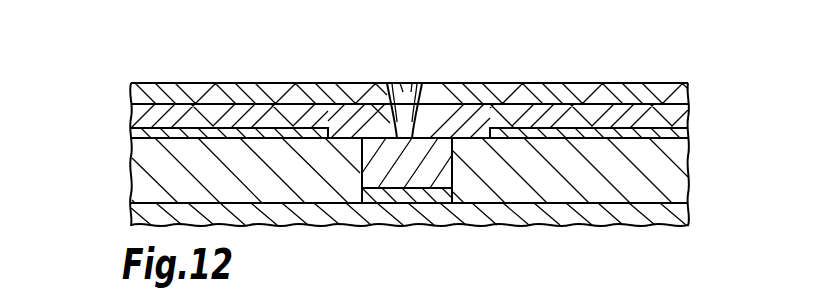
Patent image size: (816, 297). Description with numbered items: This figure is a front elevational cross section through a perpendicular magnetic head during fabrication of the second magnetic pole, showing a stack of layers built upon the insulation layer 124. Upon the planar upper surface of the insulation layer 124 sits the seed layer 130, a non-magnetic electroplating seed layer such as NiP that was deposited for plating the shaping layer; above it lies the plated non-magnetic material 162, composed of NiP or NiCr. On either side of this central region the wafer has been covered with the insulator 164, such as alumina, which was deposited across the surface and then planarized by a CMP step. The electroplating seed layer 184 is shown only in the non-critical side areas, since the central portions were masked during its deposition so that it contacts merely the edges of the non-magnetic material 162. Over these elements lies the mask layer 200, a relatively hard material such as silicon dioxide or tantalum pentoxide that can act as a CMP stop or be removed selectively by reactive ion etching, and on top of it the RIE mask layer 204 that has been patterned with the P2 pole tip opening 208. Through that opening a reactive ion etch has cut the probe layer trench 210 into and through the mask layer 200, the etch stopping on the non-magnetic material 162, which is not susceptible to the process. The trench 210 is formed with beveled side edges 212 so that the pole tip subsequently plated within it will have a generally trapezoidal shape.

The insulation layer 124 is at (689, 222).
The seed layer 130 is at (419, 190).
The non-magnetic material 162 is at (402, 173).
The insulator 164 is at (146, 173).
The seed layer 184 is at (188, 128).
The mask layer 200 is at (613, 112).
The RIE mask layer 204 is at (271, 91).
The P2 pole tip opening 208 is at (404, 112).
The probe layer trench 210 is at (412, 105).
The beveled side edges 212 is at (386, 82).